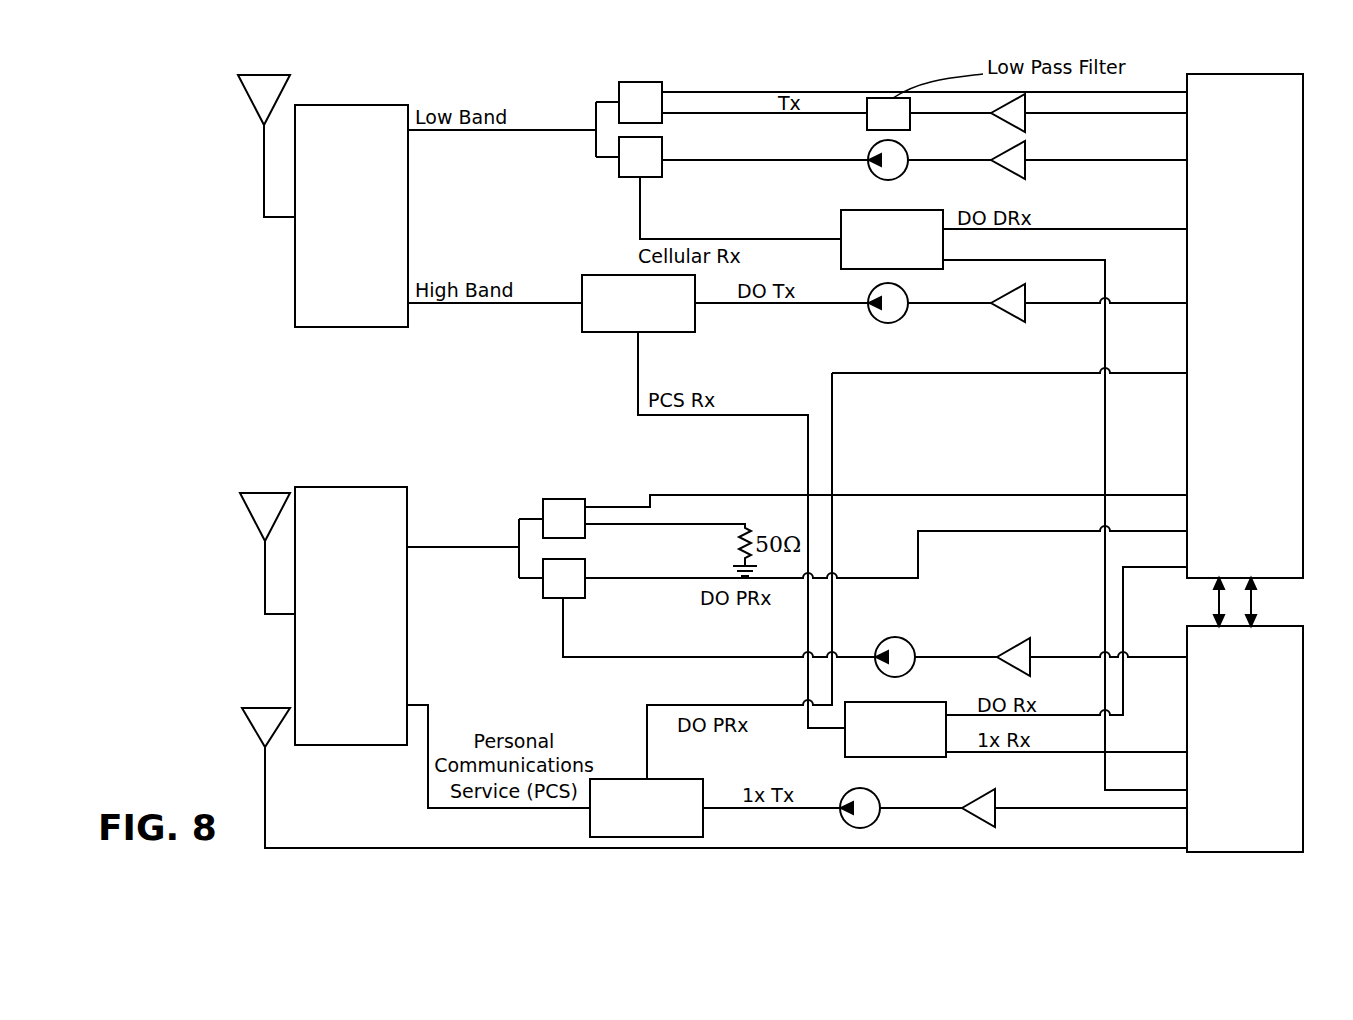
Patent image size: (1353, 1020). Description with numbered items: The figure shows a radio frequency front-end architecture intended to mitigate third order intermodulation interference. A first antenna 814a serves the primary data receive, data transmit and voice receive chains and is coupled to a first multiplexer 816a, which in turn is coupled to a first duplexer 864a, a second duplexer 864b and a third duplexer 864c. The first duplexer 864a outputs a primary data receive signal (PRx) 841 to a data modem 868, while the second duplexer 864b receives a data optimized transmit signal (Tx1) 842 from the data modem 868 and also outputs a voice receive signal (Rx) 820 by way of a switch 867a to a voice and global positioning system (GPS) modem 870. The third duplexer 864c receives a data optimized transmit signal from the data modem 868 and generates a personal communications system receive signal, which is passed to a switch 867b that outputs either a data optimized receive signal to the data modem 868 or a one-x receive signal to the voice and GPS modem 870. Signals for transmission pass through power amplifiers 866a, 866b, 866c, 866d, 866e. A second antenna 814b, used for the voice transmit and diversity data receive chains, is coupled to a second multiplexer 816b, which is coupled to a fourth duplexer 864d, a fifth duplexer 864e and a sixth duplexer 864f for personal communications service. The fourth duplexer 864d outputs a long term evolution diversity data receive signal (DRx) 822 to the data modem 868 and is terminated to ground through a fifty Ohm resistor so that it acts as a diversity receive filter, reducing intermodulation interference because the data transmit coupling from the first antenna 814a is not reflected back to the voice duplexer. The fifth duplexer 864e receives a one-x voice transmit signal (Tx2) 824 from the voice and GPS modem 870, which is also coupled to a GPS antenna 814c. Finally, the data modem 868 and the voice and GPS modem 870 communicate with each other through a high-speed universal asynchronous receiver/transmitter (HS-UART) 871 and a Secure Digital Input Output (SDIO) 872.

The first antenna 814a is at (251, 100).
The second antenna 814b is at (254, 520).
The global positioning system (GPS) antenna 814c is at (253, 727).
The first multiplexer 816a is at (351, 216).
The second multiplexer 816b is at (351, 616).
The voice receive signal (Rx) 820 is at (1101, 344).
The long term evolution (LTE) diversity data receive signal (DRx) 822 is at (958, 494).
The 1x voice transmit signal (Tx2) 824 is at (603, 658).
The primary data receive signal (PRx) 841 is at (800, 92).
The data optimized (DO) transmit signal (Tx1) 842 is at (800, 171).
The first duplexer 864a is at (640, 102).
The second duplexer 864b is at (640, 160).
The third duplexer 864c is at (638, 303).
The fourth duplexer 864d is at (563, 518).
The fifth duplexer 864e is at (565, 578).
The sixth duplexer 864f is at (646, 808).
The power amplifier 866a is at (1027, 122).
The power amplifier 866b is at (1027, 169).
The power amplifier 866c is at (1027, 312).
The power amplifier 866d is at (1032, 666).
The power amplifier 866e is at (997, 817).
The switch 867a is at (892, 239).
The switch 867b is at (895, 729).
The data modem 868 is at (1245, 326).
The voice and global positioning system (GPS) modem 870 is at (1245, 739).
The high-speed universal asynchronous receiver/transmitter (HS-UART) 871 is at (1249, 612).
The Secure Digital Input Output (SDIO) 872 is at (1213, 603).